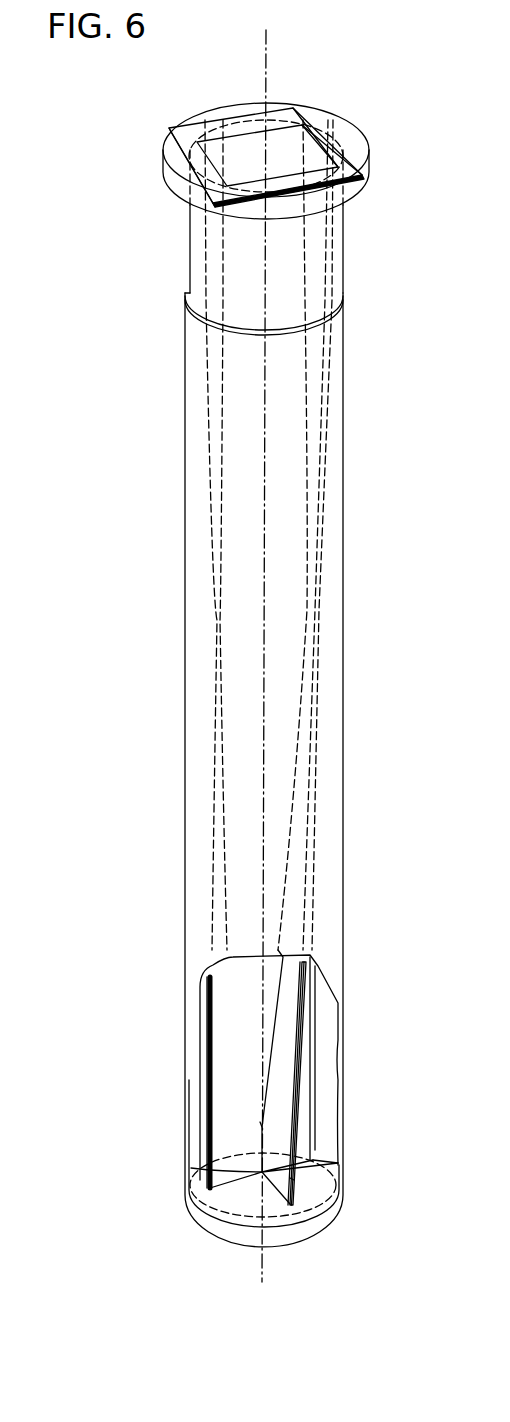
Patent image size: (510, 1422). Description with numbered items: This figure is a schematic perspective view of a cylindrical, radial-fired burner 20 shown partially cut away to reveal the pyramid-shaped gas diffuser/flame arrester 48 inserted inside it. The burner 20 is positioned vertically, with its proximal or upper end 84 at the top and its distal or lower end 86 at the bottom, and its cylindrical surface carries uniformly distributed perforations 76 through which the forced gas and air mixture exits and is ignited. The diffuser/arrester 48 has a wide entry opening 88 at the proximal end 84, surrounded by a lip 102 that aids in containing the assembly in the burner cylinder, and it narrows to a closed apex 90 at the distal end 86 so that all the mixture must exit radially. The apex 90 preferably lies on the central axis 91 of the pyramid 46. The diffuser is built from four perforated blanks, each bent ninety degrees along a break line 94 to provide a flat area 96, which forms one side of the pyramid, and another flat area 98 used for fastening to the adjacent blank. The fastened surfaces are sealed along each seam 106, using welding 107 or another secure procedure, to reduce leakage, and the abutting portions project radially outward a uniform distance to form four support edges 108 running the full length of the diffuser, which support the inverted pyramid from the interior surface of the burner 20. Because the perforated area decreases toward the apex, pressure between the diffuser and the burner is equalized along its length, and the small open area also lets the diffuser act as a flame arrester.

The burner 20 is at (130, 238).
The central axis 91 is at (265, 83).
The proximal end 84 is at (363, 152).
The gas diffuser/flame arrester 48 is at (340, 137).
The entry opening 88 is at (242, 152).
The lip 102 is at (313, 120).
The perforations 76 is at (200, 925).
The distal end 86 is at (300, 1238).
The pyramid 46 is at (240, 1003).
The flat area 98 is at (202, 1060).
The support edges 108 is at (210, 1088).
The flat area 96 is at (275, 1097).
The apex 90 is at (262, 1172).
The break line 94 is at (260, 1122).
The seam 106 is at (293, 1179).
The welding 107 is at (330, 1147).